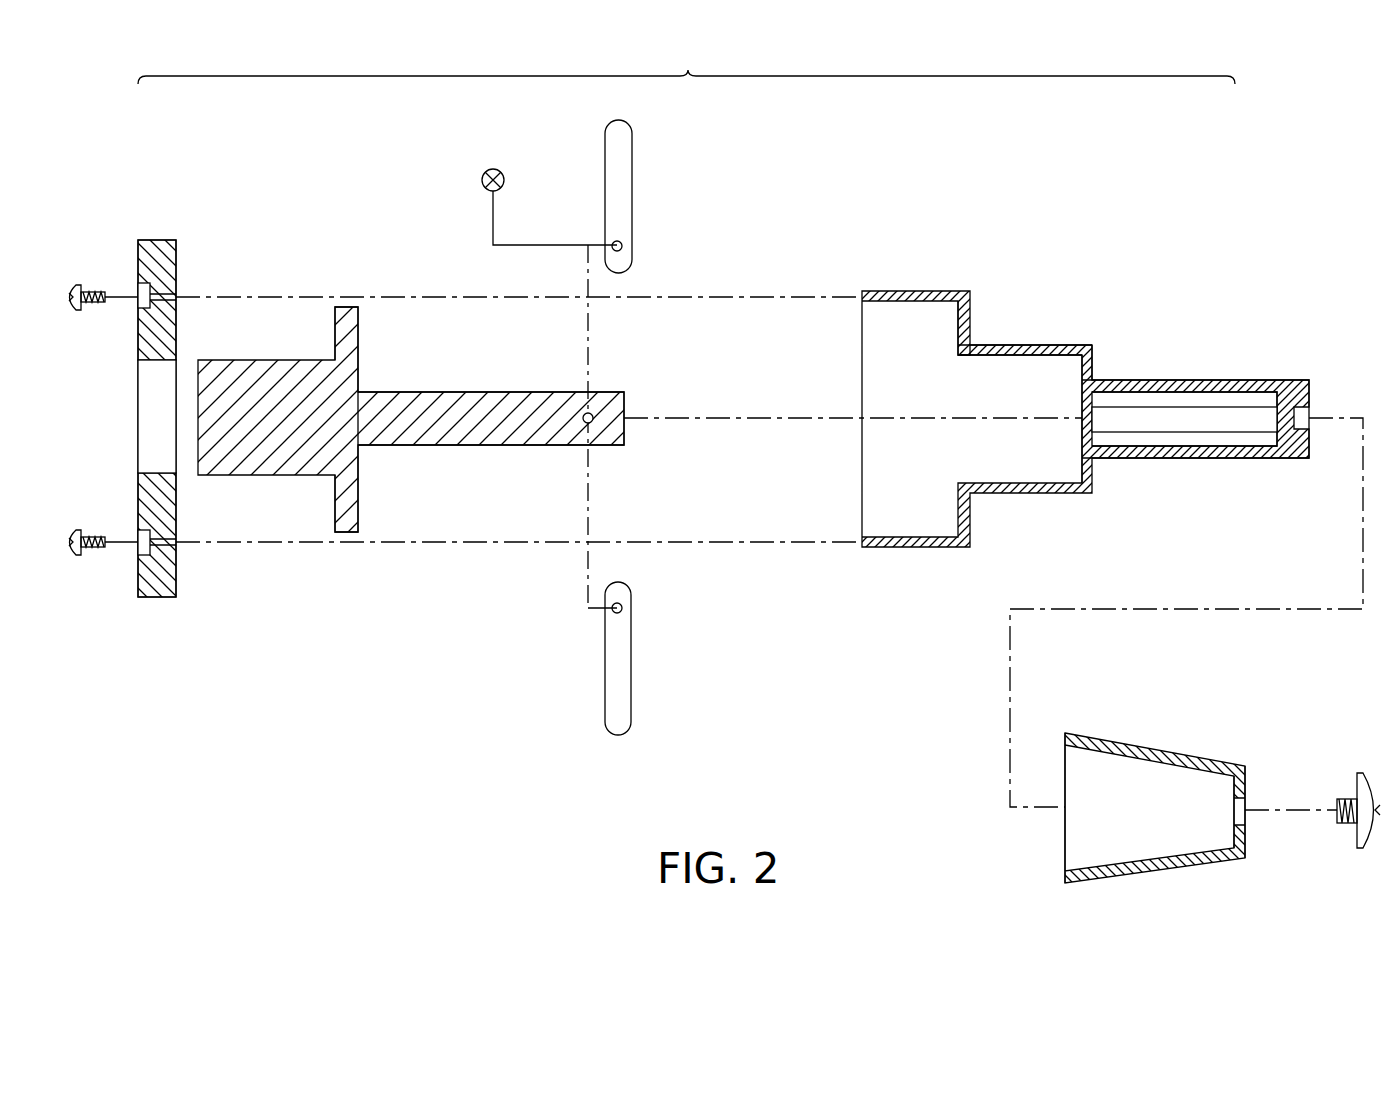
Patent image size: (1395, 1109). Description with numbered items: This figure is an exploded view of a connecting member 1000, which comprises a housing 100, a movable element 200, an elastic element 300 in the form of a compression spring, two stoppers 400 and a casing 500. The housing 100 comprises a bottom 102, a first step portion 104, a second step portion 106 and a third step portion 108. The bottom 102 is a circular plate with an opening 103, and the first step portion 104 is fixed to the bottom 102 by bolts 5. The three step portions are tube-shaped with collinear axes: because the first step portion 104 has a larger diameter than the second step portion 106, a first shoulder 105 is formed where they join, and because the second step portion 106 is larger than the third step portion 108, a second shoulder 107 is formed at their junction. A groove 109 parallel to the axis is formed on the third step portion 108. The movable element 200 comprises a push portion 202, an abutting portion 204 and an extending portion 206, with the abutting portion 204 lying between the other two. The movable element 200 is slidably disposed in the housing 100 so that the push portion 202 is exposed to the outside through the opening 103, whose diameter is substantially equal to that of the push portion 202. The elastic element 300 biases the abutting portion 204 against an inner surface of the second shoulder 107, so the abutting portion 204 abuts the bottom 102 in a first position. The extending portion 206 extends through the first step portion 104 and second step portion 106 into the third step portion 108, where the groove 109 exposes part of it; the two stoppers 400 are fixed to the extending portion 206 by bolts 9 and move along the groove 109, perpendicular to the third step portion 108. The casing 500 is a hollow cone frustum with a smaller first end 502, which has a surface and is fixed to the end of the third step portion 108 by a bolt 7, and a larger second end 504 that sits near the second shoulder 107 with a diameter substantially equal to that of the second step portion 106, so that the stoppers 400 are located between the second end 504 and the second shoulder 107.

The connecting member 1000 is at (1312, 85).
The housing 100 is at (686, 64).
The bottom 102 is at (160, 240).
The opening 103 is at (145, 415).
The first step portion 104 is at (915, 290).
The first shoulder 105 is at (968, 325).
The second step portion 106 is at (1043, 342).
The second shoulder 107 is at (1099, 345).
The third step portion 108 is at (1222, 380).
The groove 109 is at (1262, 412).
The bolts 5 is at (74, 285).
The bolt 7 is at (1345, 797).
The bolts 9 is at (505, 180).
The movable element 200 is at (411, 485).
The push portion 202 is at (268, 450).
The abutting portion 204 is at (348, 520).
The extending portion 206 is at (432, 420).
The elastic element 300 is at (675, 465).
The stoppers 400 is at (625, 143).
The casing 500 is at (1157, 750).
The first end 502 is at (1245, 833).
The second end 504 is at (1065, 840).